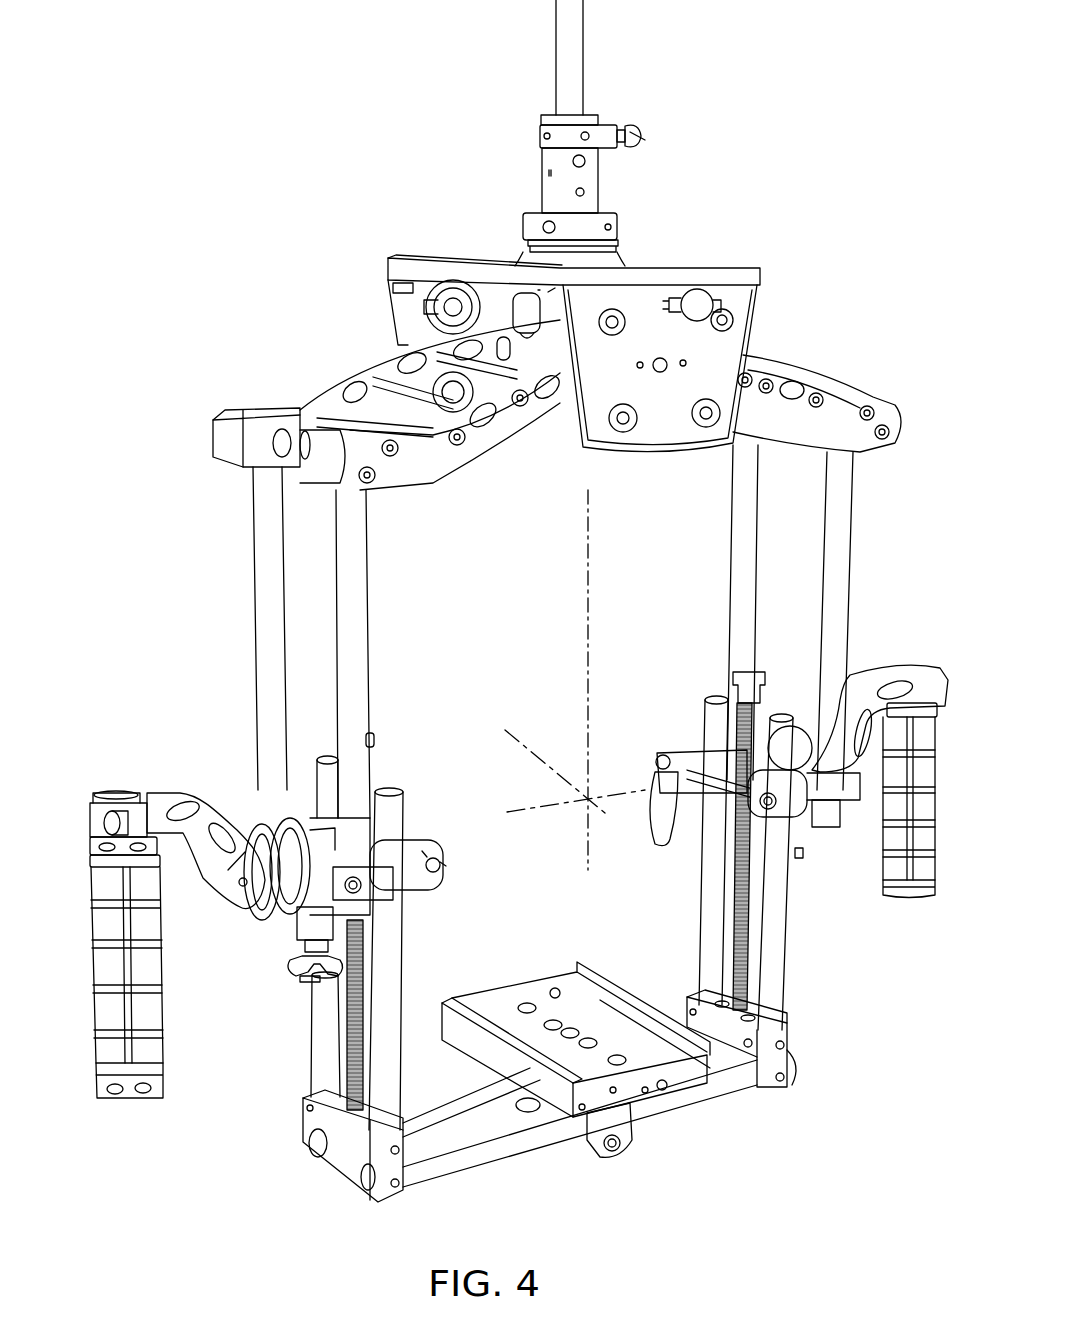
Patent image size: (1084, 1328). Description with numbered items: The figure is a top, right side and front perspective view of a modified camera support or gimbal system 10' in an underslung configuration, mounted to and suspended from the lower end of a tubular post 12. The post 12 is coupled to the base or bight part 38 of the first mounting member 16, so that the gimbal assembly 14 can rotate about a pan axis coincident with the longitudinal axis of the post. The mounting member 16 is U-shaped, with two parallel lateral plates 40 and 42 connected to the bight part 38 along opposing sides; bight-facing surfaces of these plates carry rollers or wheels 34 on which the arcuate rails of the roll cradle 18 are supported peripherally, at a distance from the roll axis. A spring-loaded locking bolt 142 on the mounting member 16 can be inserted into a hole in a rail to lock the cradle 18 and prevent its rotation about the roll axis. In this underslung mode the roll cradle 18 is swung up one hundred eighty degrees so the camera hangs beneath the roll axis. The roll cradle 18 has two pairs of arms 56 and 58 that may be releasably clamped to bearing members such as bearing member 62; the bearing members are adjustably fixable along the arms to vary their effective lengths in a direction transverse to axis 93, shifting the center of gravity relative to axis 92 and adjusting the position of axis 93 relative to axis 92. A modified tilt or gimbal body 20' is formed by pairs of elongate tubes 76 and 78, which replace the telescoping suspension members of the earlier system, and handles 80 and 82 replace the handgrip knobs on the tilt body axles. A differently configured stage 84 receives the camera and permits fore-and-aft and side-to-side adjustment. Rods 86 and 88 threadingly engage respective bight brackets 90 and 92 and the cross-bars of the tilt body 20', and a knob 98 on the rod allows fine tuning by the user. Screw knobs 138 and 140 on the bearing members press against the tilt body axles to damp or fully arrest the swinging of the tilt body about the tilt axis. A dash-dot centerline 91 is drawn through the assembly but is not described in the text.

The modified camera support or gimbal system 10' is at (895, 198).
The tubular post 12 is at (583, 192).
The gimbal assembly 14 is at (810, 932).
The first mounting member 16 is at (750, 266).
The roll cradle 18 is at (902, 396).
The modified tilt body 20' is at (320, 1205).
The rollers or wheels 34 is at (447, 403).
The base or bight part 38 is at (445, 262).
The lateral plate 40 is at (675, 448).
The lateral plate 42 is at (398, 290).
The arms 56 is at (835, 513).
The arms 58 is at (342, 595).
The bearing member 62 is at (305, 822).
The elongate tubes 76 is at (372, 1060).
The elongate tubes 78 is at (772, 900).
The handle 80 is at (928, 808).
The handle 82 is at (92, 958).
The stage 84 is at (497, 1010).
The rod 86 is at (362, 956).
The rod 88 is at (735, 925).
The bight bracket 90 is at (305, 1112).
The vertical axis 91 is at (590, 618).
The bight bracket 92 is at (523, 742).
The axis 93 is at (535, 813).
The knob 98 is at (374, 738).
The screw knob 138 is at (803, 853).
The screw knob 140 is at (290, 964).
The spring-loaded locking bolt 142 is at (700, 292).